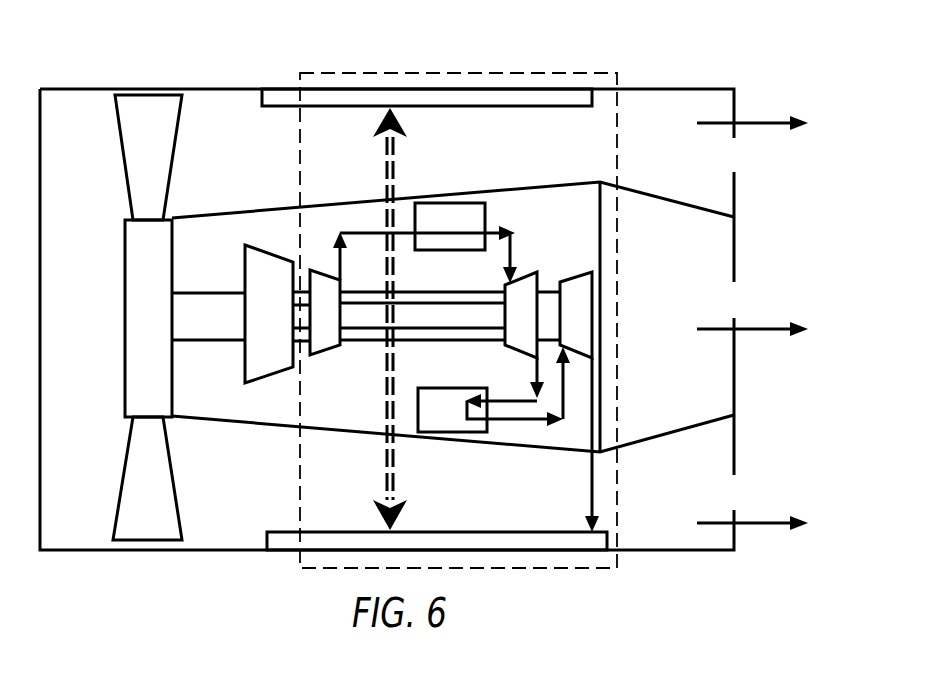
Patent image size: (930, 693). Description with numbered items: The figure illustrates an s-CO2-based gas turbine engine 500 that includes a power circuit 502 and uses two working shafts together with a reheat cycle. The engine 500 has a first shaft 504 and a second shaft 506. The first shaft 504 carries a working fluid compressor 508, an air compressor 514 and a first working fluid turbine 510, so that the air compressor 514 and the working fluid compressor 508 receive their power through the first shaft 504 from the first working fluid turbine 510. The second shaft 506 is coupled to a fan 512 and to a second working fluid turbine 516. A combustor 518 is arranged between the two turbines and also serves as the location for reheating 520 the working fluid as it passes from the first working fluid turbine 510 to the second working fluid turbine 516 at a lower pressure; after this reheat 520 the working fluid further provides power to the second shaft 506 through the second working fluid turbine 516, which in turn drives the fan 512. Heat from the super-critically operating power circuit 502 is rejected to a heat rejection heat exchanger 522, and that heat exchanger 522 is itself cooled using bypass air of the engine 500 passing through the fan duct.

The gas turbine engine 500 is at (642, 53).
The power circuit 502 is at (492, 73).
The first shaft 504 is at (365, 328).
The second shaft 506 is at (210, 292).
The working fluid compressor 508 is at (322, 270).
The first working fluid turbine 510 is at (528, 276).
The fan 512 is at (121, 152).
The air compressor 514 is at (263, 383).
The second working fluid turbine 516 is at (577, 277).
The combustor 518 is at (460, 203).
The reheating 520 is at (496, 460).
The heat rejection heat exchanger 522 is at (483, 550).